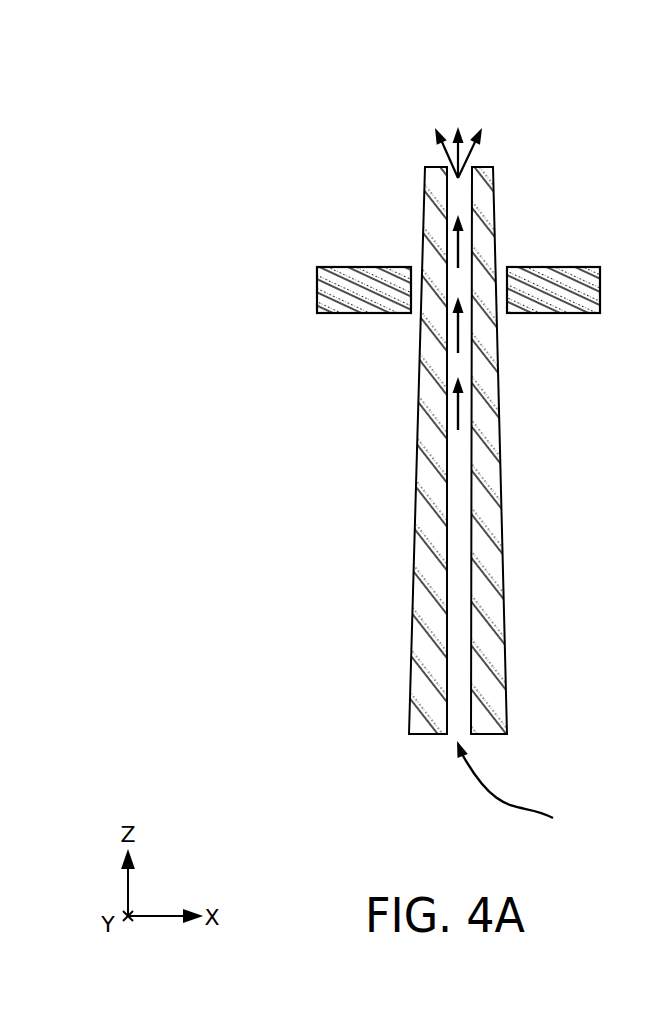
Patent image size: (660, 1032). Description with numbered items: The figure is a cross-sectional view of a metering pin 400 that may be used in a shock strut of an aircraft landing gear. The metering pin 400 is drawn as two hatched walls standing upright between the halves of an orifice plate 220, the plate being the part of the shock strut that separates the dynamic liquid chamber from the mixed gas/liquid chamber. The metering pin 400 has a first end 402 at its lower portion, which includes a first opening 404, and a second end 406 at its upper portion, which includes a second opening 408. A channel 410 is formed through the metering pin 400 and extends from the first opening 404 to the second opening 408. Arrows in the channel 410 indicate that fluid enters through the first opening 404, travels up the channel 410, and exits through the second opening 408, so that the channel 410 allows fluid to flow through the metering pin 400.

The metering pin 400 is at (310, 167).
The orifice plate 220 is at (322, 290).
The first end 402 is at (428, 722).
The second end 406 is at (480, 203).
The channel 410 is at (463, 522).
The second opening 408 is at (507, 112).
The first opening 404 is at (524, 790).